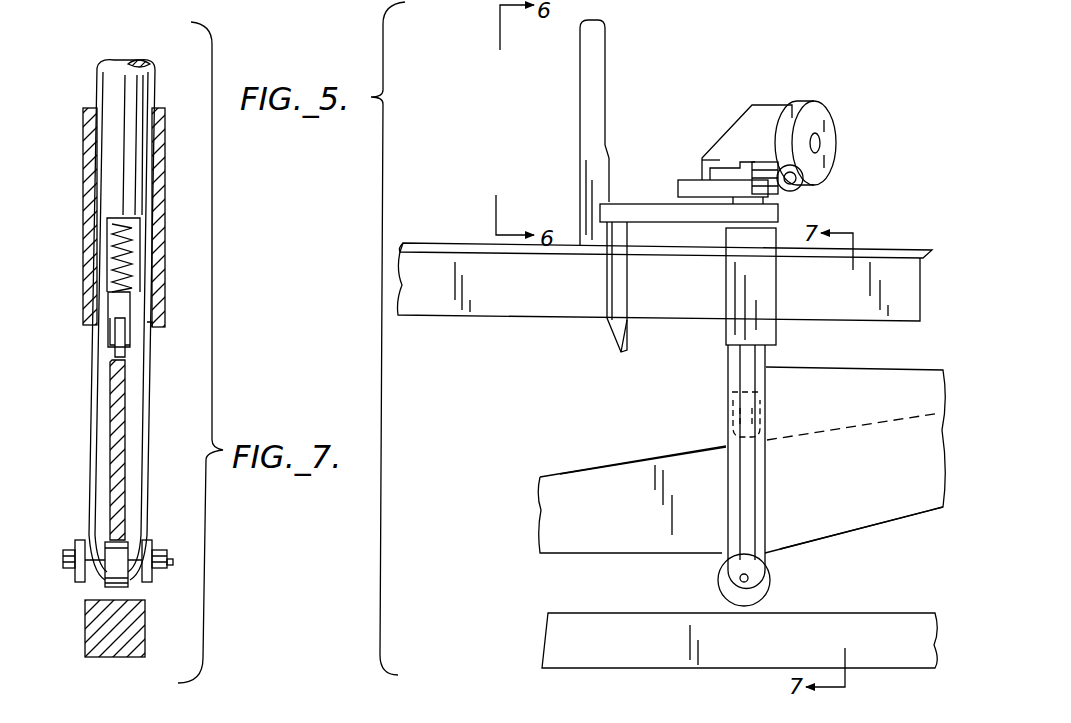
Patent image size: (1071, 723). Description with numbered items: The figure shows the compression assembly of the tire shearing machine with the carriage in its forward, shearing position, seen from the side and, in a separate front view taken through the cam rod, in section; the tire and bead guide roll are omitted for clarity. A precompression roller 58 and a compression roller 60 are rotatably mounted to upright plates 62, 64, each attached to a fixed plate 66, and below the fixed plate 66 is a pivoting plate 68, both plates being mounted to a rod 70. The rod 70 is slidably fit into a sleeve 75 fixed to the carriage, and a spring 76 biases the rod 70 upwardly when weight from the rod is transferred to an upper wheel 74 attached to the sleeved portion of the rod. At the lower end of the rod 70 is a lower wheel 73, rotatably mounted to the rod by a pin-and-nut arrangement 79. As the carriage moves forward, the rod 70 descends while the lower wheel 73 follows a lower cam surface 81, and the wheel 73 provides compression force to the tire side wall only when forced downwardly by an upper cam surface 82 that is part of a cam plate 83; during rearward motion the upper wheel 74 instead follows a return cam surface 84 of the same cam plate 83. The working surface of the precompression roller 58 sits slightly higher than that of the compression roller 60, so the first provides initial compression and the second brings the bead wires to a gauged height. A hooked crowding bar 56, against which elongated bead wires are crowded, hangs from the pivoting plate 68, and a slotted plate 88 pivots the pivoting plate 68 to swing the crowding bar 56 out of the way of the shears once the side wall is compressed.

In FIG. 5, the hooked crowding bar 56 is at (616, 345).
In FIG. 5, the precompression roller 58 is at (818, 112).
In FIG. 5, the compression roller 60 is at (801, 187).
In FIG. 5, the upright plate 62 is at (779, 107).
In FIG. 5, the upright plate 64 is at (736, 128).
In FIG. 5, the fixed plate 66 is at (690, 182).
In FIG. 5, the pivoting plate 68 is at (662, 212).
In FIG. 7, the rod 70 is at (107, 168).
In FIG. 5, the rod 70 is at (745, 508).
In FIG. 7, the lower wheel 73 is at (128, 586).
In FIG. 5, the lower wheel 73 is at (731, 602).
In FIG. 7, the upper wheel 74 is at (115, 352).
In FIG. 5, the upper wheel 74 is at (760, 422).
In FIG. 7, the sleeve 75 is at (88, 218).
In FIG. 5, the sleeve 75 is at (776, 335).
In FIG. 7, the spring 76 is at (110, 268).
In FIG. 7, the pin-and-nut arrangement 79 is at (68, 550).
In FIG. 7, the lower cam surface 81 is at (92, 600).
In FIG. 5, the lower cam surface 81 is at (632, 612).
In FIG. 5, the upper cam surface 82 is at (812, 545).
In FIG. 7, the cam plate 83 is at (113, 437).
In FIG. 5, the cam plate 83 is at (642, 528).
In FIG. 5, the return cam surface 84 is at (630, 462).
In FIG. 5, the slotted plate 88 is at (585, 82).